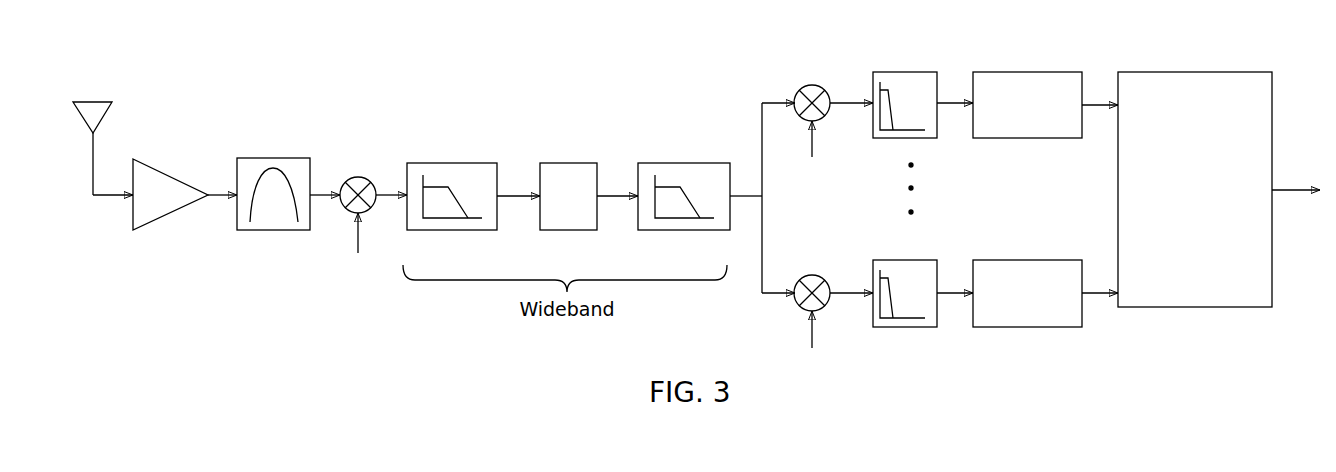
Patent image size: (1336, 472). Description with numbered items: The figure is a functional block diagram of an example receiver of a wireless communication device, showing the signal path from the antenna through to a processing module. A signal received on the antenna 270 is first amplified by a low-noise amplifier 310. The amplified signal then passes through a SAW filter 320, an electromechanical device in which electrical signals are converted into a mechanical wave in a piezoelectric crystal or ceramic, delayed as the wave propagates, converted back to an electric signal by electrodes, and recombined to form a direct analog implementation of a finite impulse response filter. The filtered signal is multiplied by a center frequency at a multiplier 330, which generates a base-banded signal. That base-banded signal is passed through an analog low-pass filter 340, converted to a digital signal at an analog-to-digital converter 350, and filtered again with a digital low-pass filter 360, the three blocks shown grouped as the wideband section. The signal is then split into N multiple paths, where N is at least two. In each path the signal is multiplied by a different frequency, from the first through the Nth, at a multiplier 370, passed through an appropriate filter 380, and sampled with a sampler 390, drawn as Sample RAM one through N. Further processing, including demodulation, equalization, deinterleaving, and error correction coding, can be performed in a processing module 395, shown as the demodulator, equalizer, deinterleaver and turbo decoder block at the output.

The antenna 270 is at (96, 142).
The low-noise amplifier 310 is at (138, 230).
The SAW filter 320 is at (270, 230).
The multiplier 330 is at (358, 177).
The analog low-pass filter 340 is at (455, 230).
The analog-to-digital converter 350 is at (563, 230).
The digital low-pass filter 360 is at (672, 230).
The multiplier 370 is at (812, 85).
The filter 380 is at (898, 72).
The sampler 390 is at (1029, 72).
The processing module 395 is at (1207, 72).